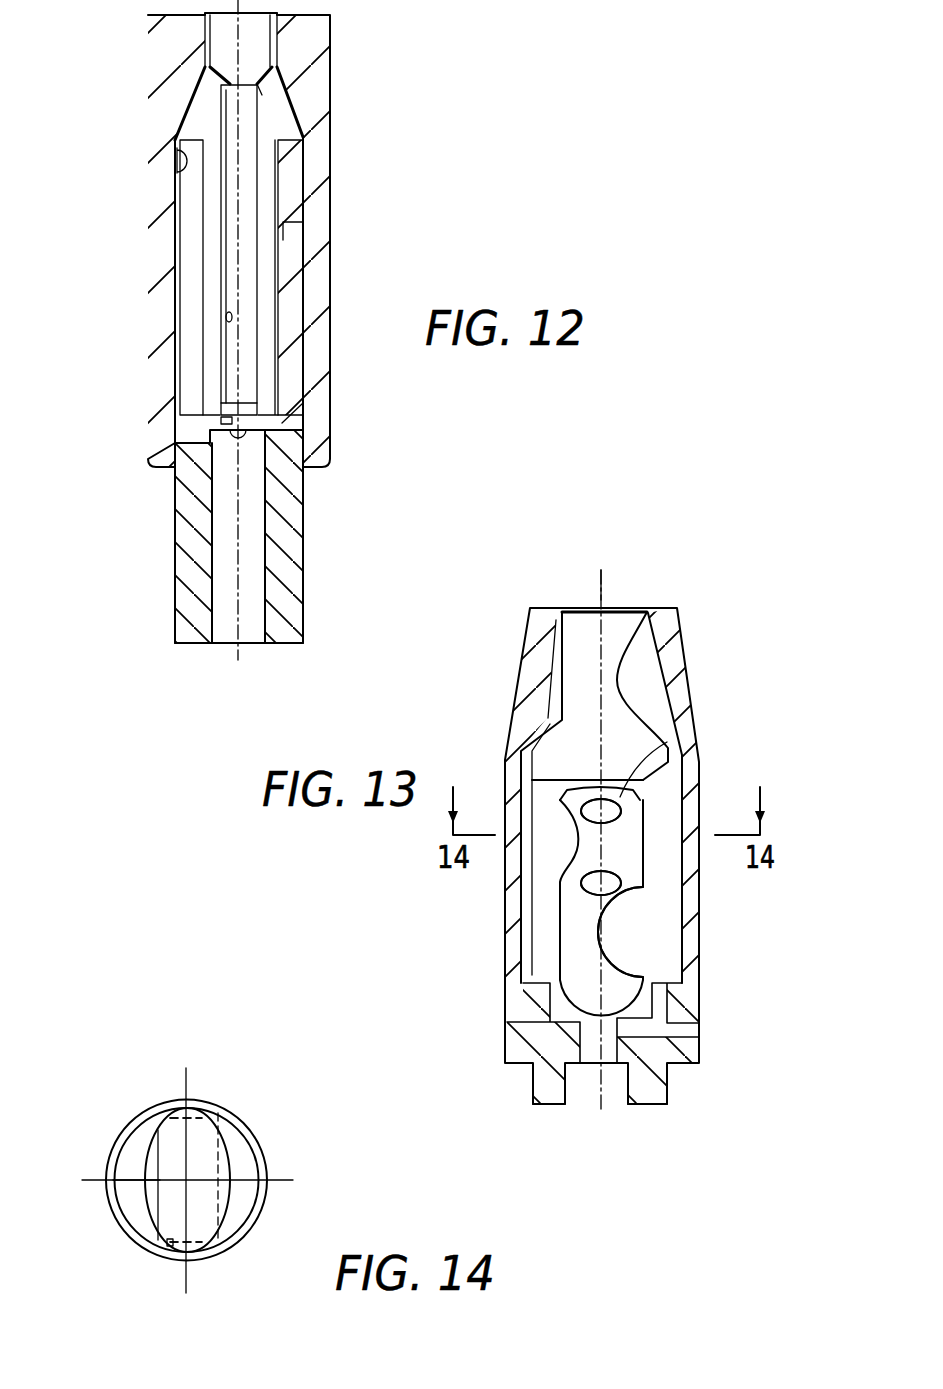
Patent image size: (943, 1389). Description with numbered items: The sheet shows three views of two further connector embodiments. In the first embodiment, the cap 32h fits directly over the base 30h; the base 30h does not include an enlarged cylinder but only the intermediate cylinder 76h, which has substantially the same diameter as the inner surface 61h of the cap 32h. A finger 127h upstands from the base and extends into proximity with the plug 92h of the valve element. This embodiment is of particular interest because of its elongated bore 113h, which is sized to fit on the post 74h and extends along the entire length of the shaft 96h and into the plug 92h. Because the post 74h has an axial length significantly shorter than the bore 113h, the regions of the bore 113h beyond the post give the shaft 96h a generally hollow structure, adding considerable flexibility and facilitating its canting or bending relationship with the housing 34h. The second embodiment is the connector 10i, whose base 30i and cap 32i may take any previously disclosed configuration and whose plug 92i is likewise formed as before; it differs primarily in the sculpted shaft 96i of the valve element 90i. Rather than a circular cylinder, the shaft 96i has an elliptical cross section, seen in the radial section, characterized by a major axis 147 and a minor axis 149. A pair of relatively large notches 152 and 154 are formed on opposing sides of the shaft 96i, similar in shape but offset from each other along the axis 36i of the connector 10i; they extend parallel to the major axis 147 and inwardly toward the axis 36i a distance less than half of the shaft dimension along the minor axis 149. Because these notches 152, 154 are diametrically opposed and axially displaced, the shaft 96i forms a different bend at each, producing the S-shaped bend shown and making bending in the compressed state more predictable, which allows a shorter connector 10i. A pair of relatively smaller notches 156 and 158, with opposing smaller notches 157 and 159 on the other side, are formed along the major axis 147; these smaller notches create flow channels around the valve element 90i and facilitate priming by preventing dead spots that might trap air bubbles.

In FIG. 12, the cap 32h is at (165, 242).
In FIG. 12, the housing 34h is at (128, 186).
In FIG. 12, the inner surface 61h is at (176, 157).
In FIG. 12, the shaft 96h is at (275, 192).
In FIG. 12, the finger 127h is at (305, 320).
In FIG. 12, the plug 92h is at (277, 120).
In FIG. 12, the bore 113h is at (230, 320).
In FIG. 12, the post 74h is at (230, 407).
In FIG. 12, the intermediate cylinder 76h is at (285, 542).
In FIG. 12, the base 30h is at (318, 597).
In FIG. 13, the cap 32i is at (673, 661).
In FIG. 14, the cap 32i is at (250, 1130).
In FIG. 13, the connector 10i is at (697, 596).
In FIG. 13, the axis 36i is at (600, 585).
In FIG. 14, the axis 36i is at (95, 1156).
In FIG. 13, the plug 92i is at (580, 682).
In FIG. 13, the valve element 90i is at (548, 810).
In FIG. 13, the notch 152 is at (572, 867).
In FIG. 14, the notch 152 is at (157, 1155).
In FIG. 13, the shaft 96i is at (573, 933).
In FIG. 14, the shaft 96i is at (203, 1222).
In FIG. 13, the notch 156 is at (622, 790).
In FIG. 14, the notch 156 is at (170, 1262).
In FIG. 13, the notch 157 is at (622, 790).
In FIG. 14, the notch 157 is at (202, 1105).
In FIG. 13, the notch 158 is at (632, 882).
In FIG. 14, the notch 158 is at (170, 1262).
In FIG. 13, the notch 159 is at (632, 882).
In FIG. 14, the notch 159 is at (202, 1105).
In FIG. 13, the notch 154 is at (633, 970).
In FIG. 14, the notch 154 is at (218, 1172).
In FIG. 13, the base 30i is at (660, 1085).
In FIG. 14, the major axis 147 is at (184, 1083).
In FIG. 14, the minor axis 149 is at (287, 1182).